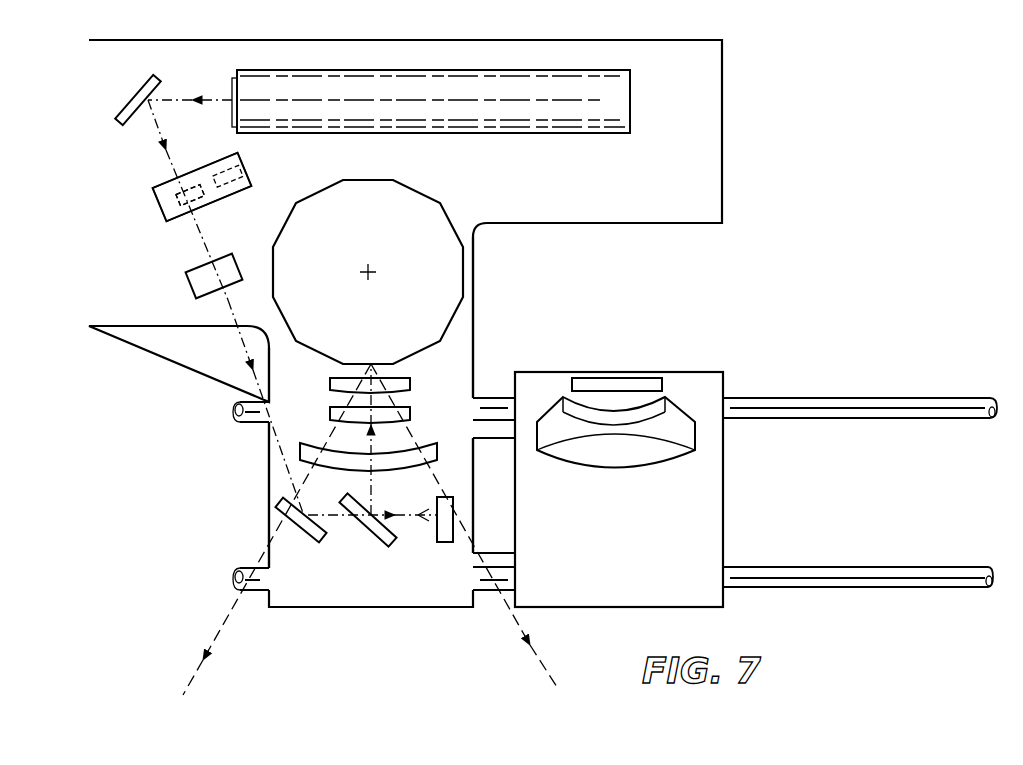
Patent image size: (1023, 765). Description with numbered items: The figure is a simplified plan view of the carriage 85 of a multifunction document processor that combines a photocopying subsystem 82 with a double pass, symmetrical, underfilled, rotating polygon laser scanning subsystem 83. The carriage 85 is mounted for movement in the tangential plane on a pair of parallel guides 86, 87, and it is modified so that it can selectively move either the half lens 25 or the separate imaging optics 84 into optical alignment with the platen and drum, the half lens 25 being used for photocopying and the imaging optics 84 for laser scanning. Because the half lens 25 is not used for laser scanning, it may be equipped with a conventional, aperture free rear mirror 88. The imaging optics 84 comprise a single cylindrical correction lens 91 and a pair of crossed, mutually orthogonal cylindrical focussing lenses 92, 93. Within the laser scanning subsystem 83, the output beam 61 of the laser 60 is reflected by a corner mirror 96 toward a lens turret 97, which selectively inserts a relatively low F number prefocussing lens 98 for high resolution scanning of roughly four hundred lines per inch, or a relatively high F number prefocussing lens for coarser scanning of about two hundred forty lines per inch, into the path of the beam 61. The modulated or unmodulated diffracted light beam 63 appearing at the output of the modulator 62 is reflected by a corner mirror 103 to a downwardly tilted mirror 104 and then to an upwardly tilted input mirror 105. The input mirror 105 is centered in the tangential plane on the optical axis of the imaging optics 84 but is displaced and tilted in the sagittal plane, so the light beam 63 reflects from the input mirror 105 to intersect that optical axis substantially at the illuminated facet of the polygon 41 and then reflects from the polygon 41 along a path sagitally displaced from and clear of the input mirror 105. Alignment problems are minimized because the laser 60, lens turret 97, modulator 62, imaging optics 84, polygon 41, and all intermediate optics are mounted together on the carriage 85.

The half lens 25 is at (613, 467).
The polygon 41 is at (412, 192).
The laser 60 is at (503, 126).
The output beam 61 is at (208, 97).
The modulator 62 is at (190, 287).
The diffracted light beam 63 is at (240, 328).
The photocopying subsystem 82 is at (672, 360).
The laser scanning subsystem 83 is at (489, 315).
The imaging optics 84 is at (452, 474).
The carriage 85 is at (722, 129).
The guide 86 is at (890, 405).
The guide 87 is at (868, 575).
The rear mirror 88 is at (604, 378).
The cylindrical correction lens 91 is at (439, 459).
The cylindrical focussing lens 92 is at (411, 414).
The cylindrical focussing lens 93 is at (411, 384).
The corner mirror 96 is at (136, 96).
The lens turret 97 is at (160, 217).
The prefocussing lens 98 is at (222, 187).
The corner mirror 103 is at (300, 537).
The downwardly tilted mirror 104 is at (439, 542).
The input mirror 105 is at (365, 542).